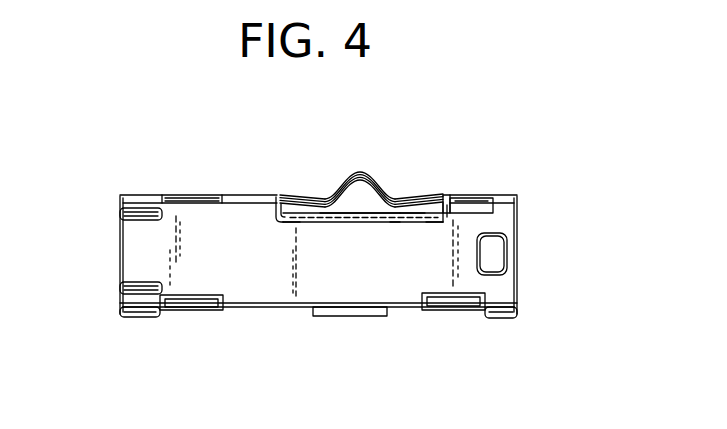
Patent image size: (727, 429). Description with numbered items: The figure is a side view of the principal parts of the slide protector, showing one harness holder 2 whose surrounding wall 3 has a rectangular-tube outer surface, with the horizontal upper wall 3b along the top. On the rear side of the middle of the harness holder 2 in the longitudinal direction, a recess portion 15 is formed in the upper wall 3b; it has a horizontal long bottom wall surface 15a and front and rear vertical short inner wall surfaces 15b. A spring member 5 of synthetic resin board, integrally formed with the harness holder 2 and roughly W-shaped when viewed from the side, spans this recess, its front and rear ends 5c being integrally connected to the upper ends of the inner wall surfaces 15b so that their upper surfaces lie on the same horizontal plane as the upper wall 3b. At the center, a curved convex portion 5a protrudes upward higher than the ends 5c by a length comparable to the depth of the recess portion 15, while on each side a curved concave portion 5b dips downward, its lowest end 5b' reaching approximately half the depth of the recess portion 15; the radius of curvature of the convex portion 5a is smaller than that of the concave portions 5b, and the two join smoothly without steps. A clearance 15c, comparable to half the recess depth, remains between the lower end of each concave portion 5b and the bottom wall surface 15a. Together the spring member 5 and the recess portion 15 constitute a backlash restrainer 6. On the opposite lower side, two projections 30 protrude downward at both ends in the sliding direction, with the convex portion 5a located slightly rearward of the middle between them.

The harness holder 2 is at (323, 249).
The surrounding wall 3 is at (198, 240).
The upper wall 3b is at (252, 195).
The spring member 5 is at (393, 231).
The curved convex portion 5a is at (360, 173).
The curved concave portion 5b is at (399, 163).
The lowest end of curved concave portion 5b' is at (272, 291).
The front and rear end 5c is at (279, 196).
The backlash restrainer 6 is at (395, 226).
The recess portion 15 is at (361, 286).
The bottom wall surface 15a is at (340, 213).
The inner wall surface 15b is at (290, 222).
The clearance 15c is at (414, 223).
The projection 30 is at (140, 317).